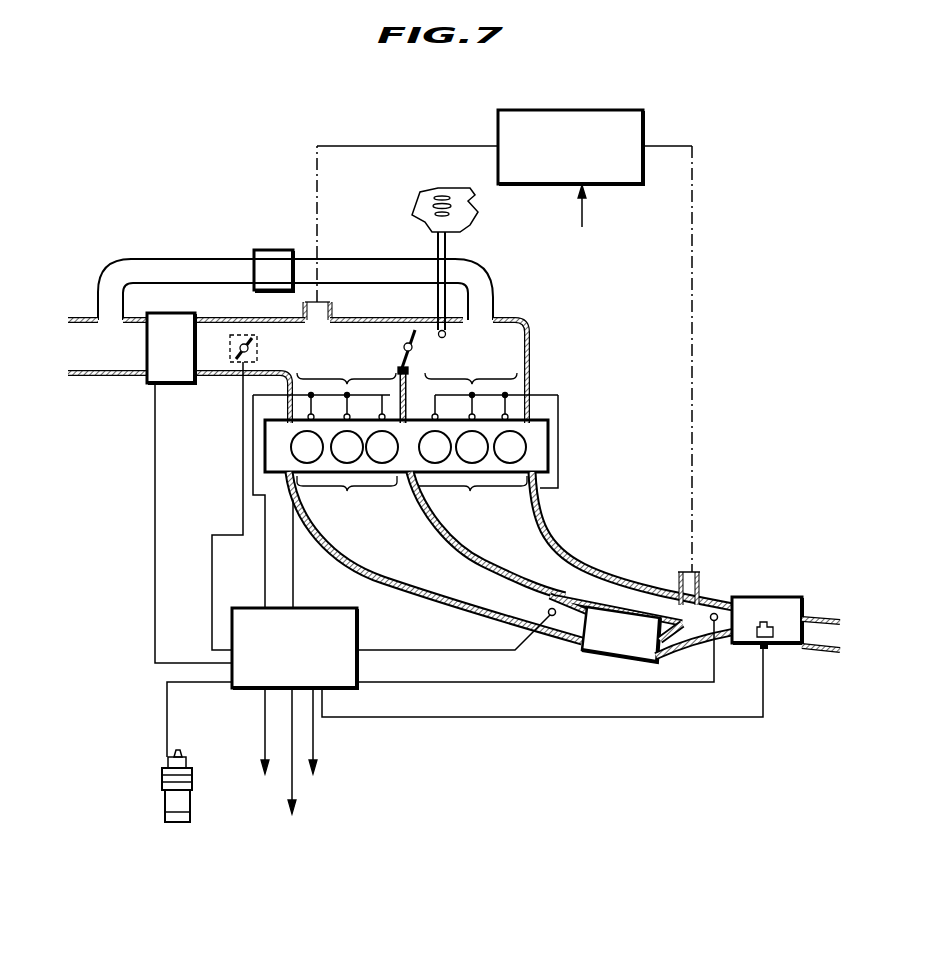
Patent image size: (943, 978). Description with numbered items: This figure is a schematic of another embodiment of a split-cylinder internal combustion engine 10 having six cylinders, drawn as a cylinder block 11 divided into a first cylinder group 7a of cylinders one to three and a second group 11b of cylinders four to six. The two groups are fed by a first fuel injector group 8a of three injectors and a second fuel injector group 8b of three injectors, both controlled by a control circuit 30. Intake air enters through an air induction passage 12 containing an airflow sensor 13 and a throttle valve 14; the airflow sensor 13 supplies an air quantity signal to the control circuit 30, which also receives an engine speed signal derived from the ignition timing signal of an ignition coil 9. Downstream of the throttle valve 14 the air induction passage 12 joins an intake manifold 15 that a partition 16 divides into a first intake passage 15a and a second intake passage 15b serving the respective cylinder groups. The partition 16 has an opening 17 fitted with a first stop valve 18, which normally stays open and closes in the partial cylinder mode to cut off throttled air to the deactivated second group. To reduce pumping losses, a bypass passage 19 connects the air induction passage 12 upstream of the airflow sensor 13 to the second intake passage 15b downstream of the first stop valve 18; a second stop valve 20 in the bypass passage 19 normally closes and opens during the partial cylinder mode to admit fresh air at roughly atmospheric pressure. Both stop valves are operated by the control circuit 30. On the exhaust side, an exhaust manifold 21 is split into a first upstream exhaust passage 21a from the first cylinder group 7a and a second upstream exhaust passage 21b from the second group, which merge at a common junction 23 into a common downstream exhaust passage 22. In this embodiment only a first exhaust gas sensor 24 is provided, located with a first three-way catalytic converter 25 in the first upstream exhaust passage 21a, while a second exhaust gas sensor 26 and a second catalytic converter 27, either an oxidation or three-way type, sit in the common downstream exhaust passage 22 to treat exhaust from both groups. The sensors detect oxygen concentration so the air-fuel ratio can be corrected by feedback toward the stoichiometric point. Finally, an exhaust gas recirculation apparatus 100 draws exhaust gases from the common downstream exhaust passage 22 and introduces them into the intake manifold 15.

The first cylinder group 7a is at (344, 471).
The first fuel injector group 8a is at (346, 386).
The second fuel injector group 8b is at (472, 386).
The ignition coil 9 is at (186, 792).
The internal combustion engine 10 is at (575, 457).
The cylinder block 11 is at (550, 429).
The second cylinder group 11b is at (469, 471).
The air induction passage 12 is at (207, 363).
The airflow sensor 13 is at (146, 381).
The throttle valve 14 is at (238, 362).
The intake manifold 15 is at (362, 318).
The first intake passage 15a is at (364, 355).
The second intake passage 15b is at (515, 359).
The partition 16 is at (410, 368).
The opening 17 is at (395, 343).
The first stop valve 18 is at (433, 347).
The bypass passage 19 is at (337, 259).
The second stop valve 20 is at (277, 257).
The exhaust manifold 21 is at (552, 523).
The first upstream exhaust passage 21a is at (450, 584).
The second upstream exhaust passage 21b is at (530, 563).
The common downstream exhaust passage 22 is at (820, 616).
The common junction 23 is at (680, 627).
The first exhaust gas sensor 24 is at (551, 616).
The first three-way catalytic converter 25 is at (607, 652).
The second exhaust gas sensor 26 is at (714, 613).
The second catalytic converter 27 is at (763, 597).
The control circuit 30 is at (357, 627).
The exhaust gas recirculation (EGR) apparatus 100 is at (580, 110).